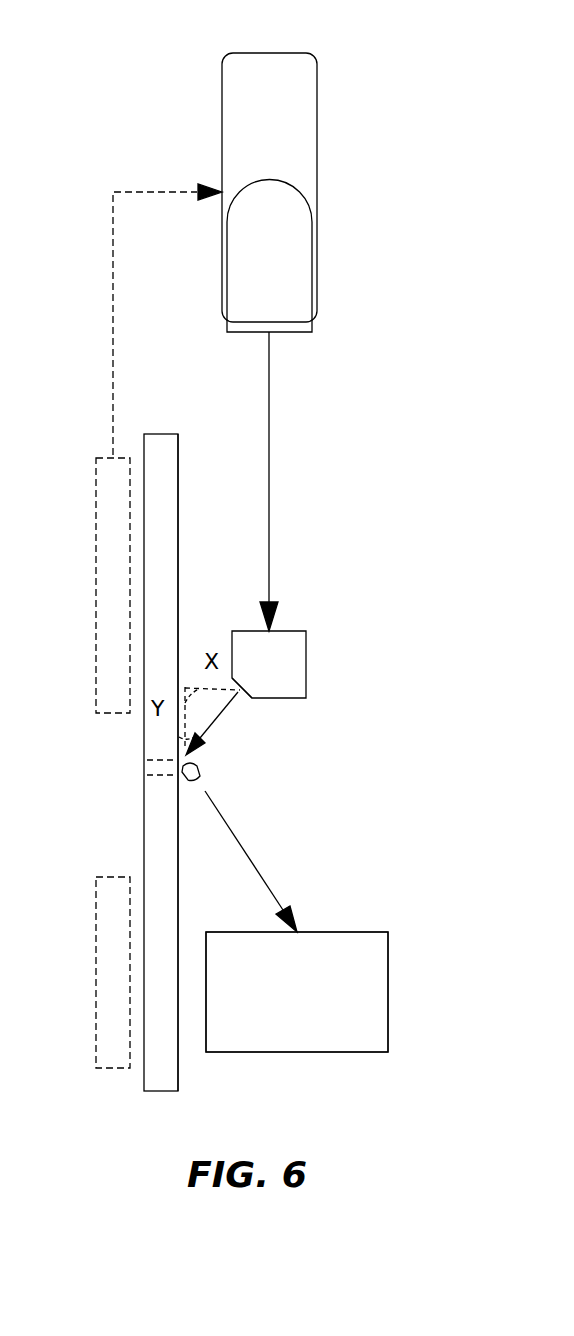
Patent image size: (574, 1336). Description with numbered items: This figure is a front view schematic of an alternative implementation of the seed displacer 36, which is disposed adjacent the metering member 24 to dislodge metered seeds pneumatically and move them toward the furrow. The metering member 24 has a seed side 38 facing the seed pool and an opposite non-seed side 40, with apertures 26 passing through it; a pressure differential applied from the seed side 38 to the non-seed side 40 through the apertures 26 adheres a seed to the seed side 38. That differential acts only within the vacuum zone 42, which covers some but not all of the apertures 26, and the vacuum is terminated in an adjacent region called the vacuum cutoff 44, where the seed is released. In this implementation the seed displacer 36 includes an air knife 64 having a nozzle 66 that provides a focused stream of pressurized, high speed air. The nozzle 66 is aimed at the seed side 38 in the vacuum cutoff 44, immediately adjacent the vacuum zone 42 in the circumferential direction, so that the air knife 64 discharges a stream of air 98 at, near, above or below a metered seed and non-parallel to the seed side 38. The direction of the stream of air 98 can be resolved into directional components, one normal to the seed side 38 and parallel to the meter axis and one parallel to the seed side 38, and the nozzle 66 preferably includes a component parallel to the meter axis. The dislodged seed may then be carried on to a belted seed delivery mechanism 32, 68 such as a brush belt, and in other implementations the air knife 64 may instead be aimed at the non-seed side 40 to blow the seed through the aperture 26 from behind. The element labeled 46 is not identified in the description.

The metering member 24 is at (160, 1093).
The apertures 26 is at (157, 785).
The seed delivery mechanism 32 is at (357, 932).
The seed displacer 36 is at (134, 124).
The seed side 38 is at (196, 470).
The non-seed side 40 is at (128, 850).
The vacuum zone 42 is at (96, 530).
The vacuum cutoff 44 is at (108, 738).
The light source 46 is at (270, 53).
The air knife 64 is at (306, 658).
The nozzle 66 is at (242, 701).
The sensor 68 is at (324, 967).
The stream of air 98 is at (216, 722).